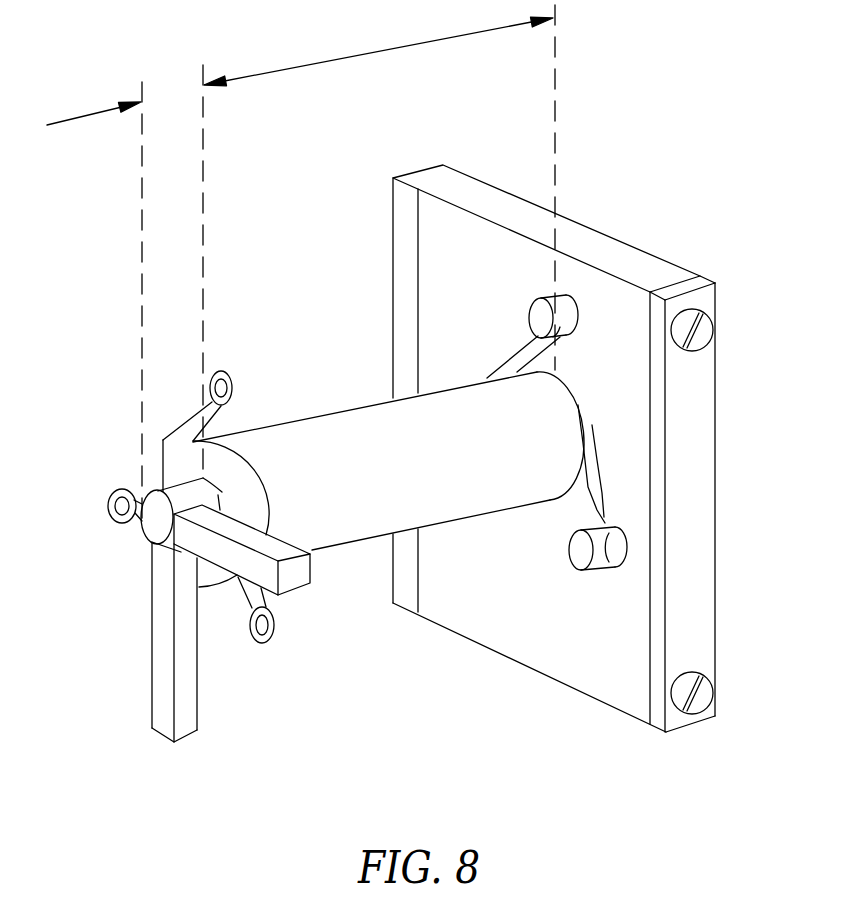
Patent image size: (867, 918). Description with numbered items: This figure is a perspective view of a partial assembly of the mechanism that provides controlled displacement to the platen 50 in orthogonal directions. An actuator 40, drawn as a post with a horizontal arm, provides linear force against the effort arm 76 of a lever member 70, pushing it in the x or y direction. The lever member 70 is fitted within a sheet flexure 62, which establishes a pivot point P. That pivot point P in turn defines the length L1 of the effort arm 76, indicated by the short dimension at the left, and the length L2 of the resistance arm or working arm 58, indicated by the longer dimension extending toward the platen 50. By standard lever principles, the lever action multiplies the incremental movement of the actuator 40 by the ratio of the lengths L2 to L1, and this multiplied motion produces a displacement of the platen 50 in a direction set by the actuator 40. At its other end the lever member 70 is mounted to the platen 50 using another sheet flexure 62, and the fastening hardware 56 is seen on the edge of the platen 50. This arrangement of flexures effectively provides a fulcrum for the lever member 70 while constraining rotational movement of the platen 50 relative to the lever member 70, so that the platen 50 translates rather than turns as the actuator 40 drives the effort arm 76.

The actuator 40 is at (193, 705).
The platen 50 is at (715, 555).
The screws 56 is at (715, 716).
The resistance arm 58 is at (357, 545).
The sheet flexure 62 is at (227, 372).
The lever member 70 is at (367, 405).
The effort arm 76 is at (140, 538).
The pivot point P is at (207, 493).
The length of effort arm L1 is at (170, 100).
The length of resistance arm L2 is at (365, 55).